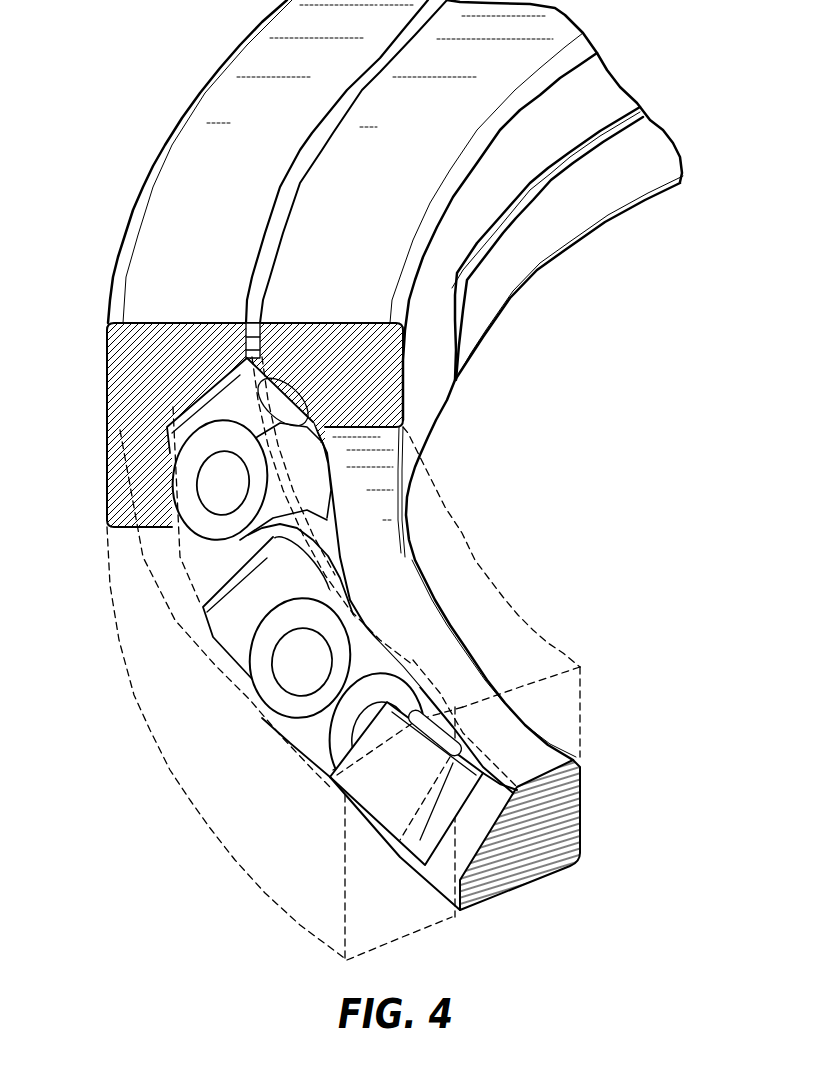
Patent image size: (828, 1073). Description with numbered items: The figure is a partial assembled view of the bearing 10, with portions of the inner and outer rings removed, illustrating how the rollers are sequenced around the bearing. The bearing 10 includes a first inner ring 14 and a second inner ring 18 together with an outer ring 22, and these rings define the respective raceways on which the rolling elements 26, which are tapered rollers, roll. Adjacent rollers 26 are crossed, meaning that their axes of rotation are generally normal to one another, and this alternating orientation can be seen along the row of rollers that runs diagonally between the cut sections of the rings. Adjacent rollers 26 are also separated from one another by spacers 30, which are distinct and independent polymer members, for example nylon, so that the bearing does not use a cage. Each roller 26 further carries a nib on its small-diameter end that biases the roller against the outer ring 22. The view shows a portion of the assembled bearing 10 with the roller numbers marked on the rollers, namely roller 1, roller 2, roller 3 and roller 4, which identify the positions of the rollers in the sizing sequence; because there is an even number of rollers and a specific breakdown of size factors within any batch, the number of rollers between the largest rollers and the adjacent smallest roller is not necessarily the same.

The bearing 10 is at (141, 72).
The first inner ring 14 is at (587, 200).
The second inner ring 18 is at (580, 107).
The outer ring 22 is at (160, 267).
The rolling elements 26 is at (380, 802).
The spacers 30 is at (286, 580).
The roller number 1 is at (450, 742).
The roller number 2 is at (311, 657).
The roller number 3 is at (301, 572).
The roller number 4 is at (248, 452).